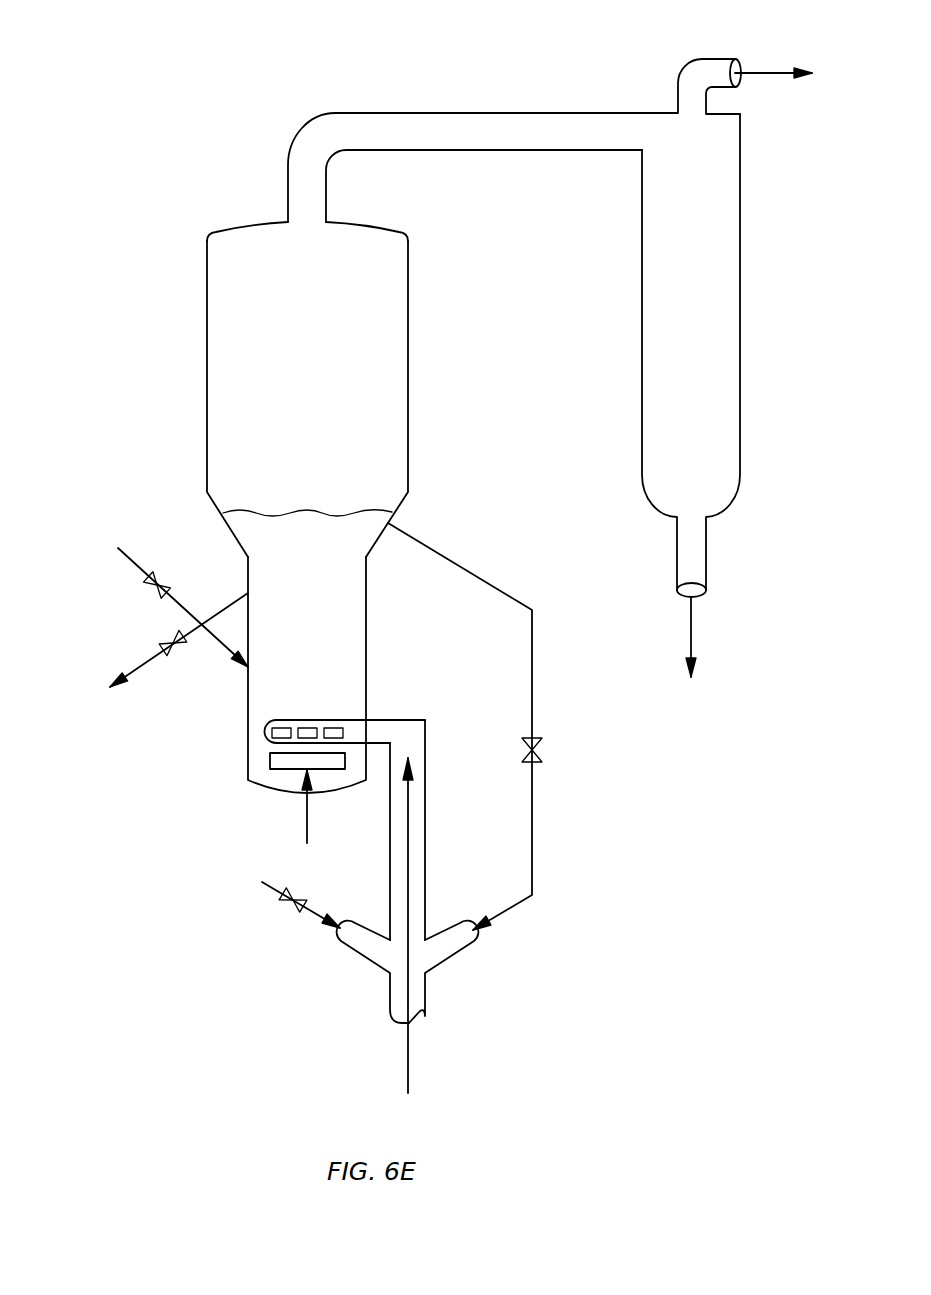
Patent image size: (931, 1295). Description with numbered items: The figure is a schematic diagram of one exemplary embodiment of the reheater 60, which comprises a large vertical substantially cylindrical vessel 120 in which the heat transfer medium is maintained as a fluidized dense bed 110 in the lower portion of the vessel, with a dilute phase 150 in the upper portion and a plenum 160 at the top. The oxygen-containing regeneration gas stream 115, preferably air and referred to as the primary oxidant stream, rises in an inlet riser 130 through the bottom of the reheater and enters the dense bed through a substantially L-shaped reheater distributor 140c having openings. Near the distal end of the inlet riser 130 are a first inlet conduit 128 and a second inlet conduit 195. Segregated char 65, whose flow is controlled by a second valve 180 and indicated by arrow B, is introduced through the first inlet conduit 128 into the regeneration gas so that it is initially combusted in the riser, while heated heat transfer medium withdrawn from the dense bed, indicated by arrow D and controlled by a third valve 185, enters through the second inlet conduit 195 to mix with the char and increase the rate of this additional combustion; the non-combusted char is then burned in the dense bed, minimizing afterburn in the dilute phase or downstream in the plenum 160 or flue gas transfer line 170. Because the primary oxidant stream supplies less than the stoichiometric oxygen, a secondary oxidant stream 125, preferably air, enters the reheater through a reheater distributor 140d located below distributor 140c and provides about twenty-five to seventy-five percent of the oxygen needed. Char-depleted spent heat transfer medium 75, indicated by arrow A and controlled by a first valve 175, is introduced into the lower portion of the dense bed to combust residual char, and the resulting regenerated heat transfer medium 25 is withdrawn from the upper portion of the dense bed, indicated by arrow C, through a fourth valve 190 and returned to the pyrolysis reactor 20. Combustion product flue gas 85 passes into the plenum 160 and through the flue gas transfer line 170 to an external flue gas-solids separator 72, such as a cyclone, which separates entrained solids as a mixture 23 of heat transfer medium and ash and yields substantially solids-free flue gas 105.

The reheater 60 is at (422, 381).
The plenum 160 is at (385, 228).
The dilute phase 150 is at (282, 375).
The vessel 120 is at (207, 385).
The fluidized dense bed 110 is at (285, 620).
The flue gas transfer line 170 is at (527, 113).
The combustion product flue gas 85 is at (477, 145).
The substantially solids-free flue gas 105 is at (769, 70).
The external flue gas-solids separator 72 is at (675, 301).
The mixture of heat transfer medium and ash 23 is at (690, 629).
The char-depleted spent heat transfer medium 75 is at (100, 520).
The first valve 175 is at (160, 577).
The regenerated heat transfer medium 25 is at (145, 660).
The fourth valve 190 is at (177, 650).
The pyrolysis reactor 20 is at (111, 691).
The third valve 185 is at (538, 757).
The reheater distributor 140c is at (405, 720).
The reheater distributor 140d is at (270, 757).
The secondary oxidant stream 125 is at (305, 813).
The inlet riser 130 is at (427, 830).
The first inlet conduit 128 is at (353, 955).
The second inlet conduit 195 is at (433, 970).
The oxygen-containing regeneration gas stream 115 is at (410, 1060).
The segregated char 65 is at (232, 873).
The second valve 180 is at (282, 908).